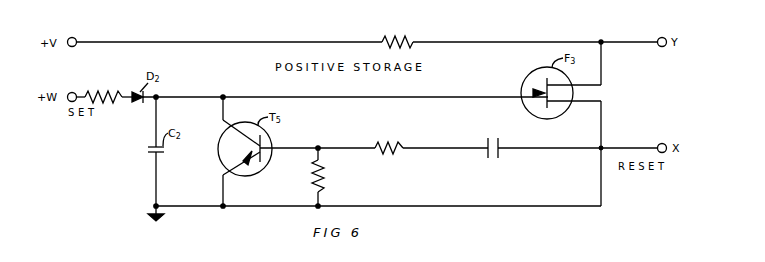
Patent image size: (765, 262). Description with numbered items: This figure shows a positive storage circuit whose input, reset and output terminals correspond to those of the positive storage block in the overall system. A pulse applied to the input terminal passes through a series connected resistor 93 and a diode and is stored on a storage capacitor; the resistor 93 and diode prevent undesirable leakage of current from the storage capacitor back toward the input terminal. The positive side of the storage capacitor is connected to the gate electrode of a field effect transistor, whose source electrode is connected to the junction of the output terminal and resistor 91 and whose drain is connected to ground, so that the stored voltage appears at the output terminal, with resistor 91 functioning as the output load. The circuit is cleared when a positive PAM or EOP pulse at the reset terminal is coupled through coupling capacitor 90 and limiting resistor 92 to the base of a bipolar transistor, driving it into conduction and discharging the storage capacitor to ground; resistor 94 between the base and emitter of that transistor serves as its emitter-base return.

The coupling capacitor 90 is at (489, 137).
The load resistor 91 is at (400, 40).
The limiting resistor 92 is at (393, 152).
The resistor 93 is at (104, 92).
The resistor 94 is at (326, 168).